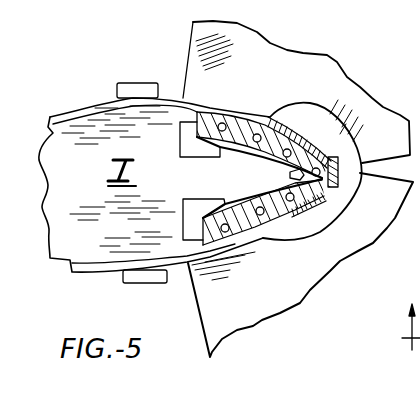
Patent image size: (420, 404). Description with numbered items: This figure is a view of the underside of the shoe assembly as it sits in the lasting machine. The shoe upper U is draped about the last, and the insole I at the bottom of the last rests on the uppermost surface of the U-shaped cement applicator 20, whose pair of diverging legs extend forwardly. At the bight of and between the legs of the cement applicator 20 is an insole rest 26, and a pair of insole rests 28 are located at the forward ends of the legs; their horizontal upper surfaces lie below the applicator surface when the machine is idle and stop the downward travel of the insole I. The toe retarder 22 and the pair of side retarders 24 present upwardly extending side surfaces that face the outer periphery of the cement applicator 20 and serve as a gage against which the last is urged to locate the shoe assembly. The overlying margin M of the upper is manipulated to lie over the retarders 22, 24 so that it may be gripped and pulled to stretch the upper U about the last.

The cement applicator 20 is at (235, 133).
The toe retarder 22 is at (338, 164).
The side retarders 24 is at (284, 136).
The insole rest 26 is at (290, 175).
The insole rests 28 is at (181, 150).
The insole I is at (154, 183).
The overlying margin of the upper M is at (284, 108).
The shoe upper U is at (80, 108).